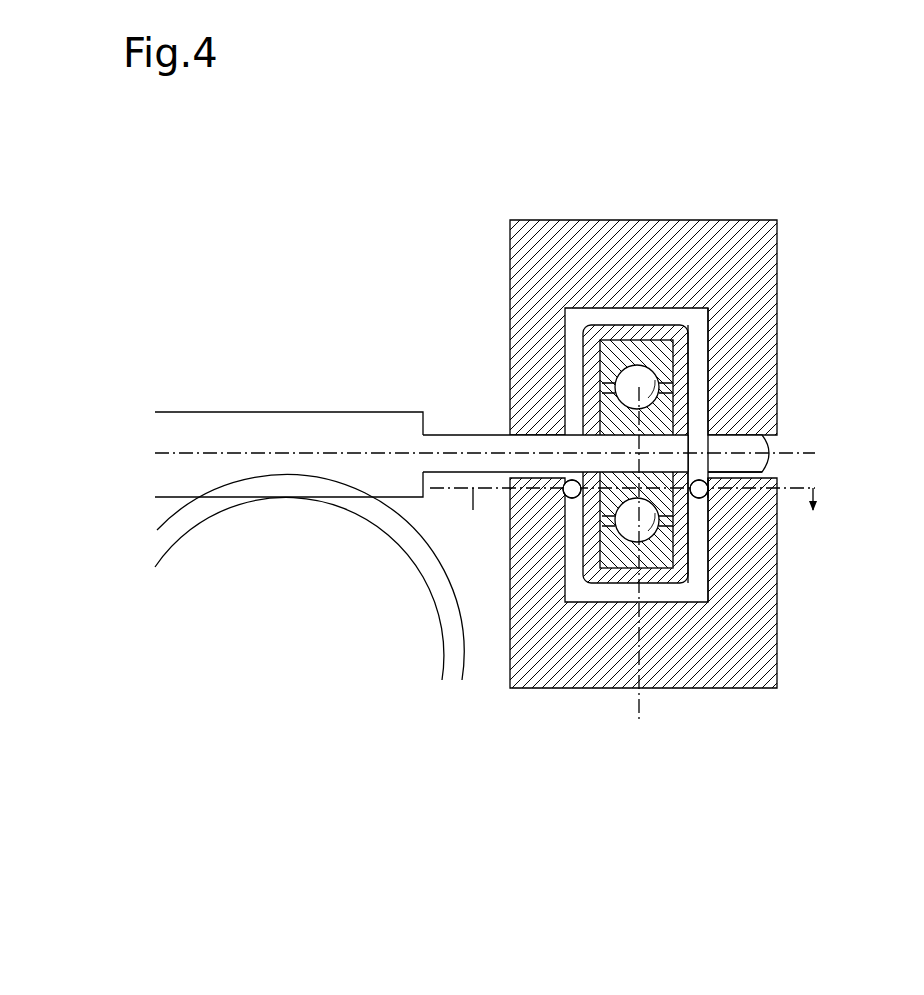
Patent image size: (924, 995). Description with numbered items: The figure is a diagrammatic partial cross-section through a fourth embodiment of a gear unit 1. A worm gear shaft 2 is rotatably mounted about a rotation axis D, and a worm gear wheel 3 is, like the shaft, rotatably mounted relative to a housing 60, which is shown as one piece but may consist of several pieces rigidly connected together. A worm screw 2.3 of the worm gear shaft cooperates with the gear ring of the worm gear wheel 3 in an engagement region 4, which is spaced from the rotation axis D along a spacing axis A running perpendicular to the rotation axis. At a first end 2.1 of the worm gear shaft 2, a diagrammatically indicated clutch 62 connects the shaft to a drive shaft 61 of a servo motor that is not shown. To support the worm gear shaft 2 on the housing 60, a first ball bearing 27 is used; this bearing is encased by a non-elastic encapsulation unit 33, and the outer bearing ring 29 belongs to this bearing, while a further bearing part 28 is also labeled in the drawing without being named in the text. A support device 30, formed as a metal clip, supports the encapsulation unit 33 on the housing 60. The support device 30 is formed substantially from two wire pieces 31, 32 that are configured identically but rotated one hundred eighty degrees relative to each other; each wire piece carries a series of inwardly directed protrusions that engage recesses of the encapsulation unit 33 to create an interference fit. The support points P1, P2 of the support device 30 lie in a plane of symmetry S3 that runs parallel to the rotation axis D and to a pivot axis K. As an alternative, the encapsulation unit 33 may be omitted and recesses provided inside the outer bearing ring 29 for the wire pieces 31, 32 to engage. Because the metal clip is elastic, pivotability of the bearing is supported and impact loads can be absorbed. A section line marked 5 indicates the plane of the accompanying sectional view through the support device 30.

The gear unit 1 is at (364, 152).
The worm gear shaft 2 is at (467, 433).
The first end 2.1 is at (702, 420).
The worm screw 2.3 is at (306, 382).
The worm gear wheel 3 is at (337, 647).
The engagement region 4 is at (271, 473).
The section line 5 is at (632, 507).
The first ball bearing 27 is at (669, 338).
The outer bearing ring 28 is at (590, 418).
The outer bearing ring 29 is at (600, 358).
The support device 30 is at (732, 502).
The wire piece 31 is at (570, 497).
The wire piece 32 is at (706, 495).
The encapsulation unit 33 is at (688, 342).
The housing 60 is at (653, 274).
The drive shaft 61 is at (758, 463).
The clutch 62 is at (700, 448).
The spacing axis A is at (640, 643).
The rotation axis D is at (436, 452).
The pivot axis K is at (635, 500).
The support point P1 is at (572, 493).
The support point P2 is at (706, 492).
The plane of symmetry S3 is at (340, 490).